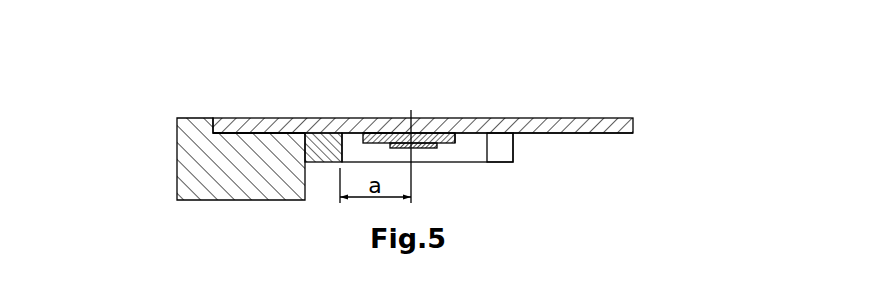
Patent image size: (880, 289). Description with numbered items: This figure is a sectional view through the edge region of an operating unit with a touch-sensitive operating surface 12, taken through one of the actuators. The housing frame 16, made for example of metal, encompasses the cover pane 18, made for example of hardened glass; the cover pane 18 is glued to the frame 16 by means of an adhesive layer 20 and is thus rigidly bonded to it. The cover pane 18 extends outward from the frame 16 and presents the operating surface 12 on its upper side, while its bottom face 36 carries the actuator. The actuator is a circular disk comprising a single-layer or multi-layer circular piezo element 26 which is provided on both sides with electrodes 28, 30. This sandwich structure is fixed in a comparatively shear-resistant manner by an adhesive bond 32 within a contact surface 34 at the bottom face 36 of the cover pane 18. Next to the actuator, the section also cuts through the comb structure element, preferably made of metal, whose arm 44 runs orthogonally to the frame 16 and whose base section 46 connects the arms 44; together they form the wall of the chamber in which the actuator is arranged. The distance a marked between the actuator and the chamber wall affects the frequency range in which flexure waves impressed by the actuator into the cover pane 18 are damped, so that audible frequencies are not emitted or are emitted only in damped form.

The touch-sensitive operating surface 12 is at (576, 117).
The frame 16 is at (215, 155).
The cover pane 18 is at (603, 134).
The adhesive layer 20 is at (265, 128).
The piezo element 26 is at (453, 140).
The electrode 28 is at (418, 150).
The electrode 30 is at (500, 140).
The adhesive bond 32 is at (368, 122).
The contact surface 34 is at (362, 110).
The bottom face 36 is at (573, 137).
The arm 44 is at (514, 140).
The base section 46 is at (323, 150).